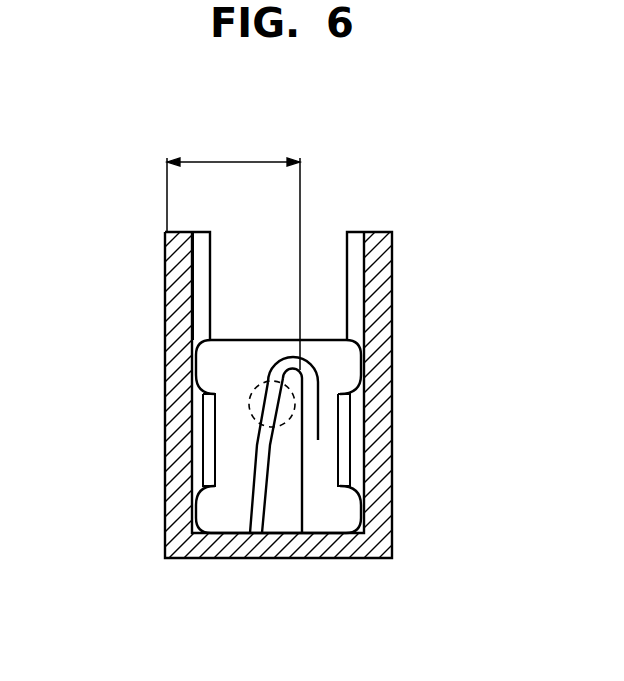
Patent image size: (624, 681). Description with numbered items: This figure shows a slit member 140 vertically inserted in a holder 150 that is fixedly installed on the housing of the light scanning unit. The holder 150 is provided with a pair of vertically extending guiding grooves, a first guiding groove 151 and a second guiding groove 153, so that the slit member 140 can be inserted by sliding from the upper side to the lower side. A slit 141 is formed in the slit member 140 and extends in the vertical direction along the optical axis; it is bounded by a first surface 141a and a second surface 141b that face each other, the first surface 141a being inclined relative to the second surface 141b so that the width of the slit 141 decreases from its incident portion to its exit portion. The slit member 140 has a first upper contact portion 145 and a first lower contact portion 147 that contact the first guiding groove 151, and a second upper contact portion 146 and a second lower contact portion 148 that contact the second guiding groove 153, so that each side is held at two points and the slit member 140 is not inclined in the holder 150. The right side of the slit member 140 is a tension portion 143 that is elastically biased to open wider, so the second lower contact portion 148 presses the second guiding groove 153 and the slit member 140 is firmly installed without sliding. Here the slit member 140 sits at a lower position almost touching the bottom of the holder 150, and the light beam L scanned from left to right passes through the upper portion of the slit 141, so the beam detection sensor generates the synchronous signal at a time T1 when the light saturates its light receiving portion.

The slit member 140 is at (309, 337).
The slit 141 is at (287, 506).
The first surface of the slit 141a is at (257, 540).
The second surface of the slit 141b is at (318, 475).
The tension portion 143 is at (336, 452).
The first upper contact portion 145 is at (196, 341).
The second upper contact portion 146 is at (363, 338).
The first lower contact portion 147 is at (199, 535).
The second lower contact portion 148 is at (362, 529).
The holder 150 is at (384, 560).
The first guiding groove 151 is at (205, 266).
The second guiding groove 153 is at (353, 277).
The light beam L is at (249, 404).
The time T1 is at (233, 253).